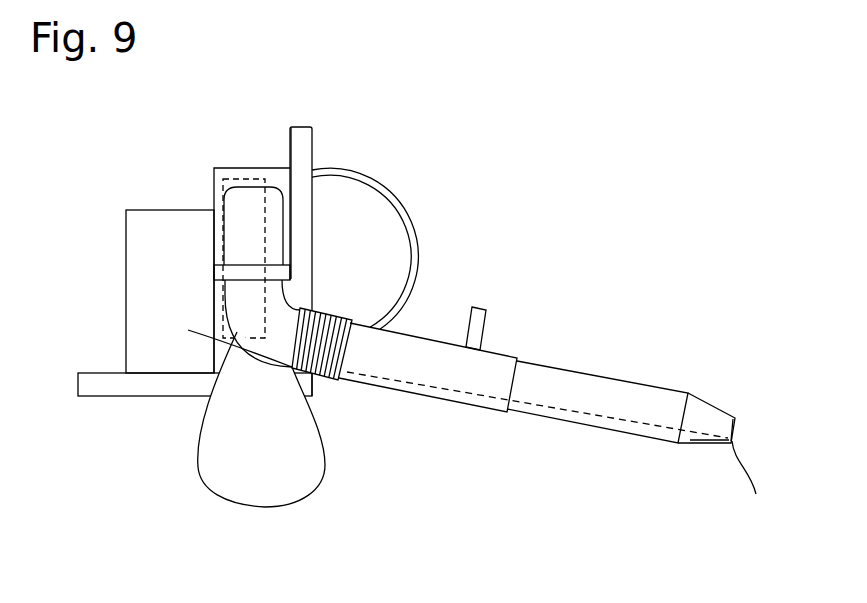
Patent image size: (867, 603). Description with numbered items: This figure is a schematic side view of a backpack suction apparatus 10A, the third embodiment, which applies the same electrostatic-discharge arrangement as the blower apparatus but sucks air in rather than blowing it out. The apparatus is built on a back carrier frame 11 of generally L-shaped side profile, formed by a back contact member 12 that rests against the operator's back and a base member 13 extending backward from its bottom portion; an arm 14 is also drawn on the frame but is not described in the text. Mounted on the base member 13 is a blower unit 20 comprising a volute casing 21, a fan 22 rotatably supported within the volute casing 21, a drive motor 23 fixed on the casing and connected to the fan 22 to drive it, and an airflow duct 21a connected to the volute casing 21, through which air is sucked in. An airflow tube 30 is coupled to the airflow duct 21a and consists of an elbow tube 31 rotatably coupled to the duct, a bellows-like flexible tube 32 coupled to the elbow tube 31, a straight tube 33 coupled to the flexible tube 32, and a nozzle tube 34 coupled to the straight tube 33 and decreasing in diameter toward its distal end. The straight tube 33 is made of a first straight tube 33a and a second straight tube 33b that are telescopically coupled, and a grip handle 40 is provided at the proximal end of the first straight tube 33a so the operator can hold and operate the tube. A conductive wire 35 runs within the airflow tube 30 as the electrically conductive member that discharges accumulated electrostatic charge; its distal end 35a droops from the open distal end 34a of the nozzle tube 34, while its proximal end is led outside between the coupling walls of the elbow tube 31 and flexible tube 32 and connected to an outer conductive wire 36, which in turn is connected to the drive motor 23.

The backpack suction apparatus 10A is at (389, 111).
The back carrier frame 11 is at (308, 135).
The back contact member 12 is at (307, 148).
The base member 13 is at (115, 392).
The arm 14 is at (407, 217).
The blower unit 20 is at (186, 150).
The volute casing 21 is at (267, 182).
The airflow duct 21a is at (275, 255).
The fan 22 is at (247, 172).
The drive motor 23 is at (157, 225).
The airflow tube 30 is at (558, 346).
The elbow tube 31 is at (243, 310).
The flexible tube 32 is at (328, 382).
The straight tube 33 is at (513, 404).
The first straight tube 33a is at (458, 395).
The second straight tube 33b is at (608, 427).
The nozzle tube 34 is at (690, 437).
The open distal end 34a is at (737, 418).
The conductive wire 35 is at (500, 397).
The distal end 35a is at (740, 467).
The outer conductive wire 36 is at (203, 342).
The grip handle 40 is at (483, 322).